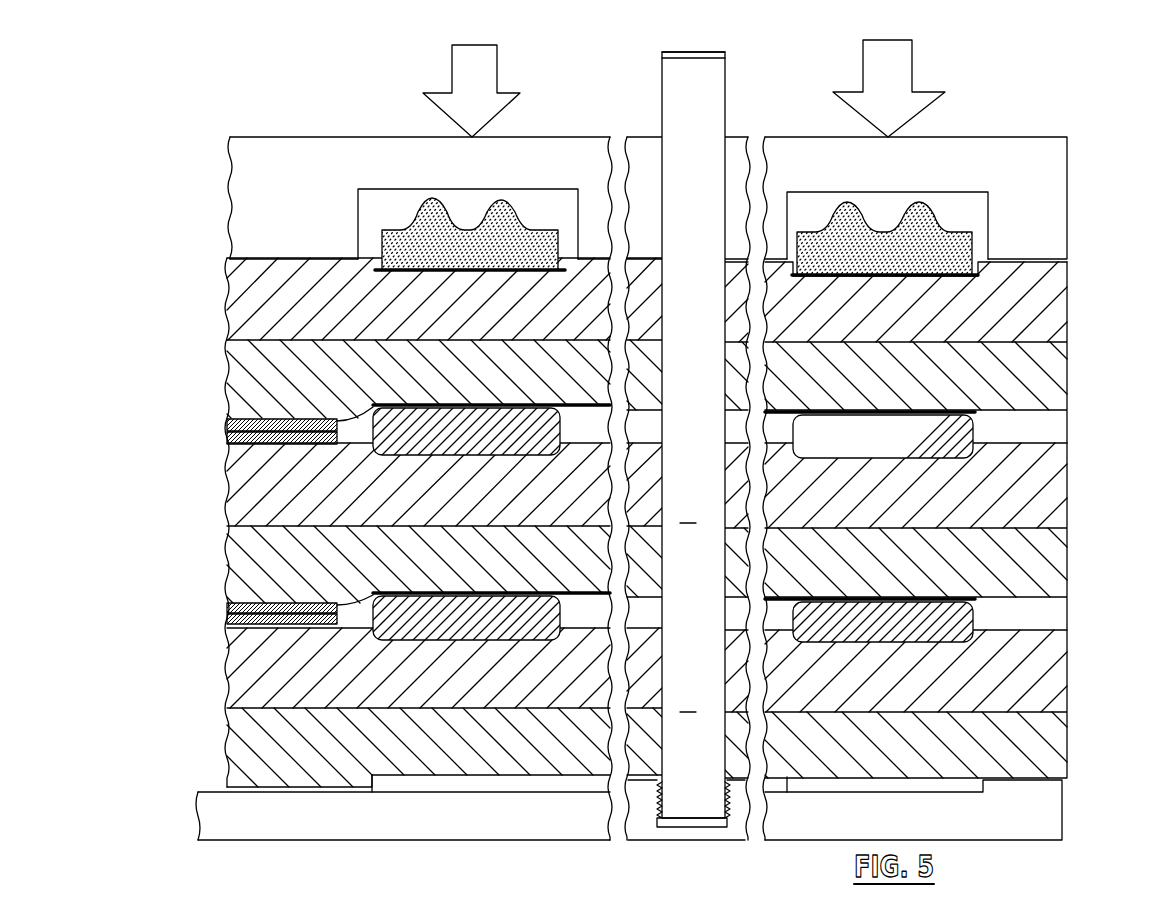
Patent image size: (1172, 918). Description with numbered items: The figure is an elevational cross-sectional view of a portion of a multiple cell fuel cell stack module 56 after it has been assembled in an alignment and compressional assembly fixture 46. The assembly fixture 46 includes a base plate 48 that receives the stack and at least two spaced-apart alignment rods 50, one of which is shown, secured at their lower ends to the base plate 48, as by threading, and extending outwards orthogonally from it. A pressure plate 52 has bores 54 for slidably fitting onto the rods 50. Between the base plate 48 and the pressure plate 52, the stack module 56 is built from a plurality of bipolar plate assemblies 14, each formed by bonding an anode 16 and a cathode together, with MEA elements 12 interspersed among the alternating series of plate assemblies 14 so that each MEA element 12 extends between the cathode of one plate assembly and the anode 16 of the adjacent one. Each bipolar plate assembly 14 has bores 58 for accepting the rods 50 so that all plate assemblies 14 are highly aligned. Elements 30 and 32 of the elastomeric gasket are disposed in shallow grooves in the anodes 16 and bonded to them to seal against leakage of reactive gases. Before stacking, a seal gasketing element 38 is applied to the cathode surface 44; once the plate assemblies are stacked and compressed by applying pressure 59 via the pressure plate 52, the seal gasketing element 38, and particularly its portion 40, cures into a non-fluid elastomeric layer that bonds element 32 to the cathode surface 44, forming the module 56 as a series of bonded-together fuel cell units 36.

The MEA element 12 is at (203, 418).
The bipolar plate assembly 14 is at (212, 262).
The anode 16 is at (229, 262).
The elastomeric gasket element 30 is at (418, 222).
The elastomeric gasket element 32 is at (925, 207).
The fuel cell unit 36 is at (149, 783).
The seal gasketing element 38 is at (473, 776).
The portion of seal gasketing element 40 is at (790, 780).
The cathode surface 44 is at (992, 418).
The assembly fixture 46 is at (172, 807).
The base plate 48 is at (277, 822).
The alignment rod 50 is at (676, 461).
The pressure plate 52 is at (272, 165).
The bore 54 is at (660, 128).
The fuel cell stack module 56 is at (1083, 258).
The bore 58 is at (583, 632).
The pressure 59 is at (463, 88).